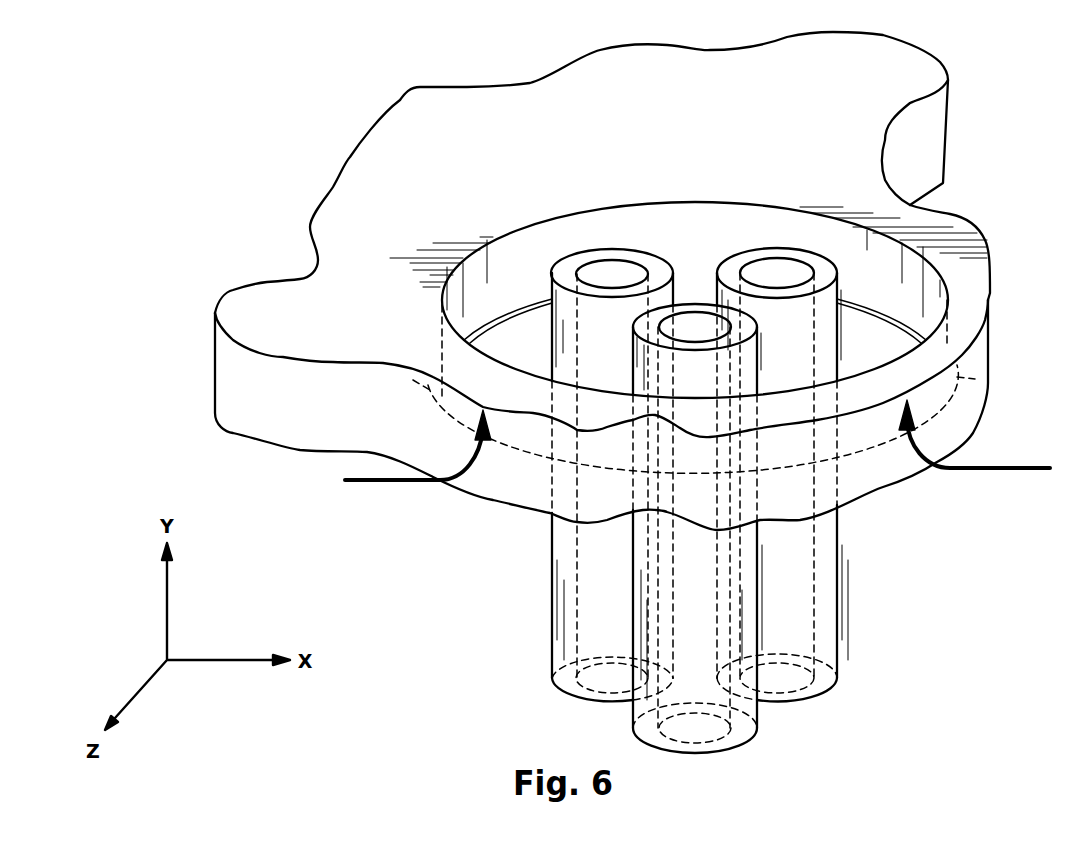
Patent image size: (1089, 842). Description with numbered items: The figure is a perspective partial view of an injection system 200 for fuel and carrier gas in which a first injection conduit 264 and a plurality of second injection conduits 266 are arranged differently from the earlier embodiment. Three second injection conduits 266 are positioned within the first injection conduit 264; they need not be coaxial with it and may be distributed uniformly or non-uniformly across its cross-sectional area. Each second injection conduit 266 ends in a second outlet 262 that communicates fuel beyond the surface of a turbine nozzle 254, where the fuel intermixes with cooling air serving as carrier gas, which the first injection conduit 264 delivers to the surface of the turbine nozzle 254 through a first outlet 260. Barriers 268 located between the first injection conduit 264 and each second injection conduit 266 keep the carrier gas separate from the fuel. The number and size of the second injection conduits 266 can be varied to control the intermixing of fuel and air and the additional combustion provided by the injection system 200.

The injection system 200 is at (378, 82).
The turbine nozzle 254 is at (505, 118).
The first outlet 260 is at (505, 297).
The second outlets 262 is at (610, 272).
The first injection conduit 264 is at (420, 485).
The second injection conduits 266 is at (600, 602).
The barriers 268 is at (640, 258).